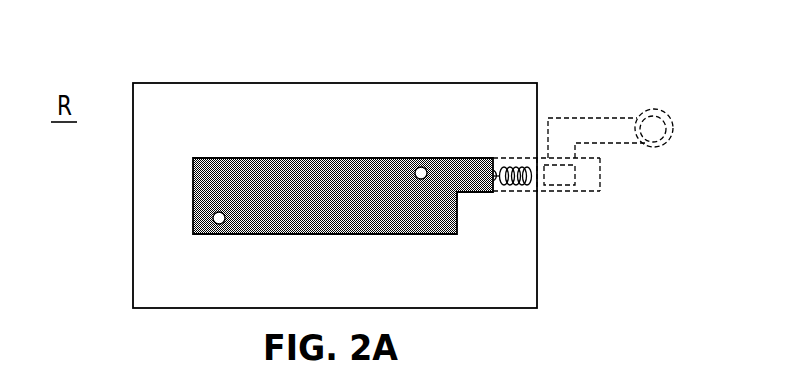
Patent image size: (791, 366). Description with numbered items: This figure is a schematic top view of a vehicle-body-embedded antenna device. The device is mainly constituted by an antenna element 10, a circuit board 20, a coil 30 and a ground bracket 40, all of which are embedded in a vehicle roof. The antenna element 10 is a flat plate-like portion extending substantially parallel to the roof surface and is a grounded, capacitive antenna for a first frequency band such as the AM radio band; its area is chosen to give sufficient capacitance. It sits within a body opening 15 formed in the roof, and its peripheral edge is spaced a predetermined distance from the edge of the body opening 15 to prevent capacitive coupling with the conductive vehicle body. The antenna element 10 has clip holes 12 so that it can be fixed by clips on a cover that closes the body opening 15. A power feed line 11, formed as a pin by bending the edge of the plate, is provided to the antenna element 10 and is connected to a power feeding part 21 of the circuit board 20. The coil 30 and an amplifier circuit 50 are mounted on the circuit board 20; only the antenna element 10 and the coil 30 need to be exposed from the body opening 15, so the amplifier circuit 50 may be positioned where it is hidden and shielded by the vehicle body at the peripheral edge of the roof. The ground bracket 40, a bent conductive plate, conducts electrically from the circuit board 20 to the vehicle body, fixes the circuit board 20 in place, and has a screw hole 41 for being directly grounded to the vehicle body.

The antenna element 10 is at (356, 213).
The power feed line 11 is at (491, 172).
The clip holes 12 is at (420, 166).
The body opening 15 is at (133, 210).
The circuit board 20 is at (599, 193).
The power feeding part 21 is at (498, 193).
The coil 30 is at (508, 157).
The ground bracket 40 is at (598, 118).
The screw hole 41 is at (650, 110).
The amplifier circuit 50 is at (570, 190).